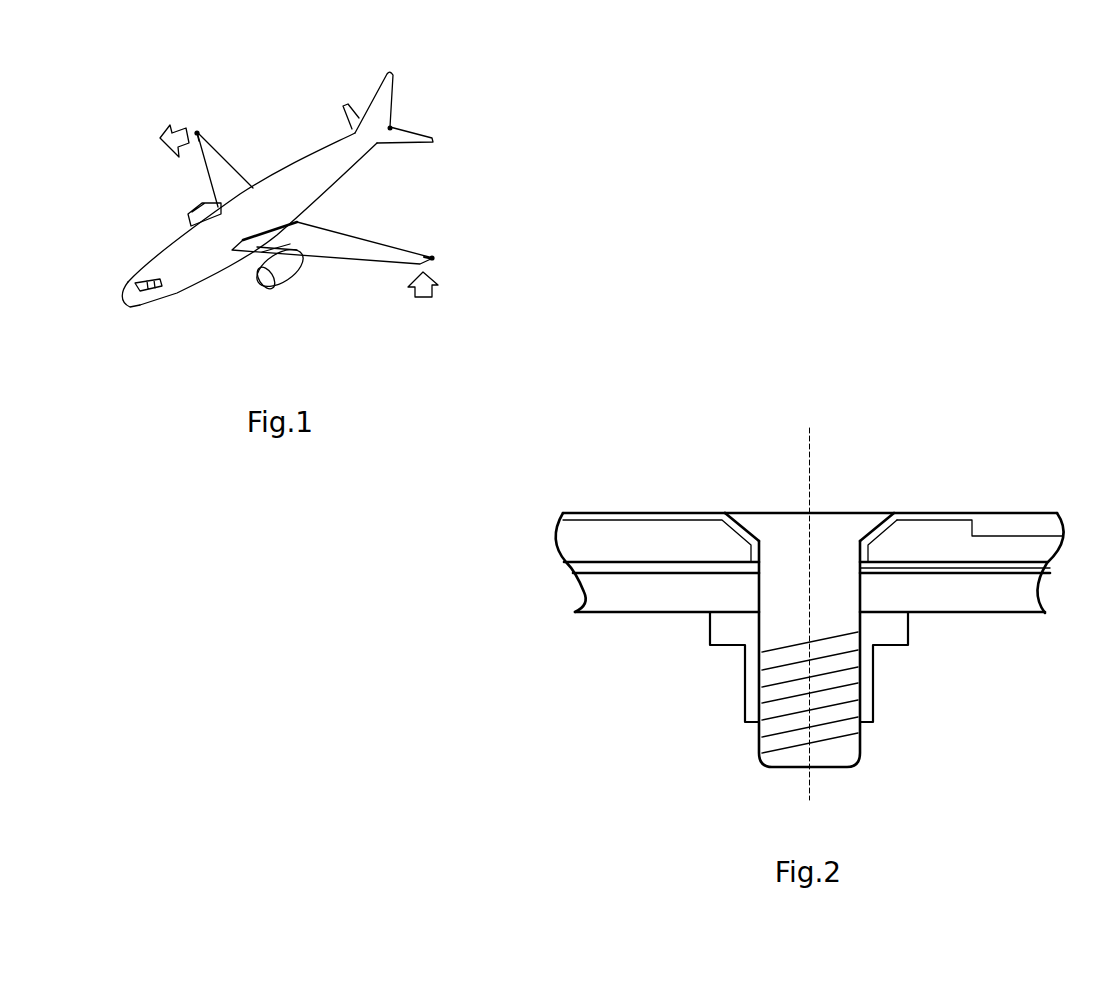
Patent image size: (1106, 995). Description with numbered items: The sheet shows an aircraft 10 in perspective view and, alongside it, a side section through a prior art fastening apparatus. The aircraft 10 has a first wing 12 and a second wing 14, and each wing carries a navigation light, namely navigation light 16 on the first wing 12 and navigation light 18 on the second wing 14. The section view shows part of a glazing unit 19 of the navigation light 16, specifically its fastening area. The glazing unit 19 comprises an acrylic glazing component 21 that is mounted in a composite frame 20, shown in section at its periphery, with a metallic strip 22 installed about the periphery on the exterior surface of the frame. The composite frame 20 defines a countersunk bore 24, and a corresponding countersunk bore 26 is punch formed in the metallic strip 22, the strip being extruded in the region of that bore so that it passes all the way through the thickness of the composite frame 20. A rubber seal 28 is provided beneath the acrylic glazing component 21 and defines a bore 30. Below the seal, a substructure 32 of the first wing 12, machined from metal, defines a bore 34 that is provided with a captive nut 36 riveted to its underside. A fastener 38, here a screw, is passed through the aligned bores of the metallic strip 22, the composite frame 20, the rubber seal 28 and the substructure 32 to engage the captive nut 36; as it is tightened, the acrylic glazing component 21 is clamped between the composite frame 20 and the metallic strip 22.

In FIG. 1, the aircraft 10 is at (231, 90).
In FIG. 1, the first wing 12 is at (220, 168).
In FIG. 1, the second wing 14 is at (355, 248).
In FIG. 1, the navigation light 16 is at (205, 142).
In FIG. 1, the navigation light 18 is at (433, 258).
In FIG. 2, the glazing unit 19 is at (1016, 457).
In FIG. 2, the composite frame 20 is at (601, 540).
In FIG. 2, the acrylic glazing component 21 is at (1052, 530).
In FIG. 2, the metallic strip 22 is at (947, 518).
In FIG. 2, the countersunk bore 24 is at (731, 538).
In FIG. 2, the countersunk bore 26 is at (882, 530).
In FIG. 2, the rubber seal 28 is at (995, 568).
In FIG. 2, the bore 30 is at (860, 567).
In FIG. 2, the substructure 32 is at (611, 595).
In FIG. 2, the bore 34 is at (758, 582).
In FIG. 2, the captive nut 36 is at (745, 687).
In FIG. 2, the fastener 38 is at (810, 663).